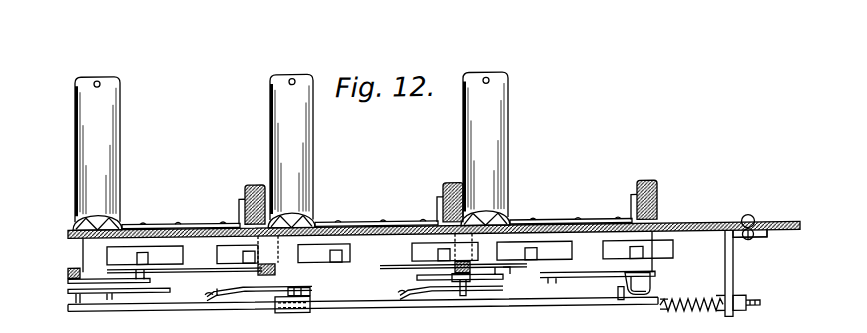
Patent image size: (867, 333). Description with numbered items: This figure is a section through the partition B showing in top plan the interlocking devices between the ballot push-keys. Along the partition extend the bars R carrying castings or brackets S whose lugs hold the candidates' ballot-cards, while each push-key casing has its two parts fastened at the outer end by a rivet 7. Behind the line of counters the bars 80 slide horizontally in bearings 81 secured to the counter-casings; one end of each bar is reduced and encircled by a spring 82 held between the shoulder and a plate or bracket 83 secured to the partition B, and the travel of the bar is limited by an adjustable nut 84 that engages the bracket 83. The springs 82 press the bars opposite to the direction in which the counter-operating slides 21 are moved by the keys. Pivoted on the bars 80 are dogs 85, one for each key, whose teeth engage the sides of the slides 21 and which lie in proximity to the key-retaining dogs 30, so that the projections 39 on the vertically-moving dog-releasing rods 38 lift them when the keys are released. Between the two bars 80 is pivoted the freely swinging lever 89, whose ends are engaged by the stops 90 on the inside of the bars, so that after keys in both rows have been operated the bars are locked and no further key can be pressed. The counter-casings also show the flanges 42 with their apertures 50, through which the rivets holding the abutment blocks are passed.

The rivet 7 is at (100, 81).
The bar R is at (121, 180).
The casting or bracket S is at (167, 223).
The partition B is at (709, 230).
The apertures 50 is at (137, 257).
The flanges 42 is at (365, 252).
The vertically-movable rods 38 is at (368, 254).
The key-retaining dogs 30 is at (320, 283).
The dogs 85 is at (312, 290).
The movable projection or slide 21 is at (118, 298).
The plate or bracket 83 is at (455, 301).
The arms 39 is at (466, 300).
The bearings 81 is at (287, 317).
The bars 80 is at (157, 313).
The springs 82 is at (702, 306).
The adjustable nuts 84 is at (746, 318).
The lever 89 is at (652, 289).
The projections or stops 90 is at (618, 296).